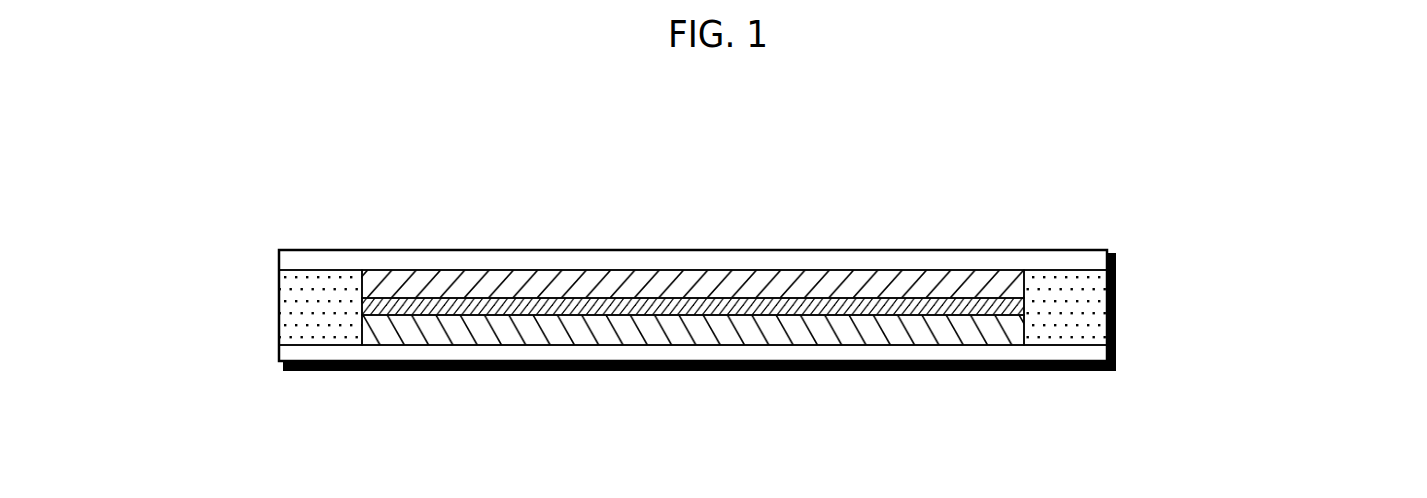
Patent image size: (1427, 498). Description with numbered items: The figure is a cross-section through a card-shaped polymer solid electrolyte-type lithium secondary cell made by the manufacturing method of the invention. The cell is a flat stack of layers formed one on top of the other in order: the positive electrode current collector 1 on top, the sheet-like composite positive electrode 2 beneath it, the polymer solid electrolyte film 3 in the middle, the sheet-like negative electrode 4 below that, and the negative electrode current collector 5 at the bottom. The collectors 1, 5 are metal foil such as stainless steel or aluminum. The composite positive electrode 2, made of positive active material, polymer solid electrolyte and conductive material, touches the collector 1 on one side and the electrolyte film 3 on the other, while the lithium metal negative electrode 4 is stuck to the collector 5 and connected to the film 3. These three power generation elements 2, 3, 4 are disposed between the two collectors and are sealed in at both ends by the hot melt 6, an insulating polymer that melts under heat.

The positive electrode current collector 1 is at (497, 223).
The sheet-like composite positive electrode 2 is at (927, 265).
The polymer solid electrolyte film 3 is at (1030, 298).
The sheet-like negative electrode 4 is at (888, 325).
The negative electrode current collector 5 is at (658, 348).
The hot melt 6 is at (1172, 355).